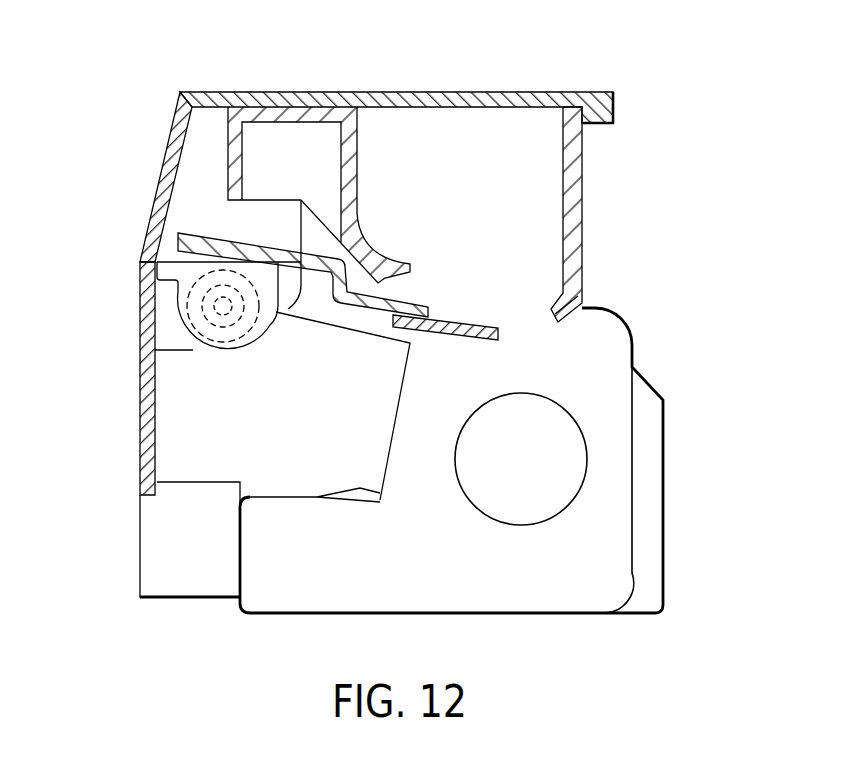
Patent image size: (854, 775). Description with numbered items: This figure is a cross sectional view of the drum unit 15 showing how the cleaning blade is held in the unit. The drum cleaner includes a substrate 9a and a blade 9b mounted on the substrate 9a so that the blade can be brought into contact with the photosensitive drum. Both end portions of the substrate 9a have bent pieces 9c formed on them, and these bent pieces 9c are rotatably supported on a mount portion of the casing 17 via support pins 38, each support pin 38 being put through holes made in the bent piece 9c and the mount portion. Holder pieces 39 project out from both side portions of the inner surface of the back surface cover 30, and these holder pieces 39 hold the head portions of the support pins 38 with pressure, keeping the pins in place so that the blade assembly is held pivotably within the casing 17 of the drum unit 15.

The drum unit 15 is at (477, 83).
The casing 17 is at (571, 92).
The substrate 9a is at (312, 246).
The blade 9b is at (477, 328).
The bent pieces 9c is at (188, 257).
The back surface cover 30 is at (152, 350).
The support pins 38 is at (229, 307).
The holder pieces 39 is at (178, 351).